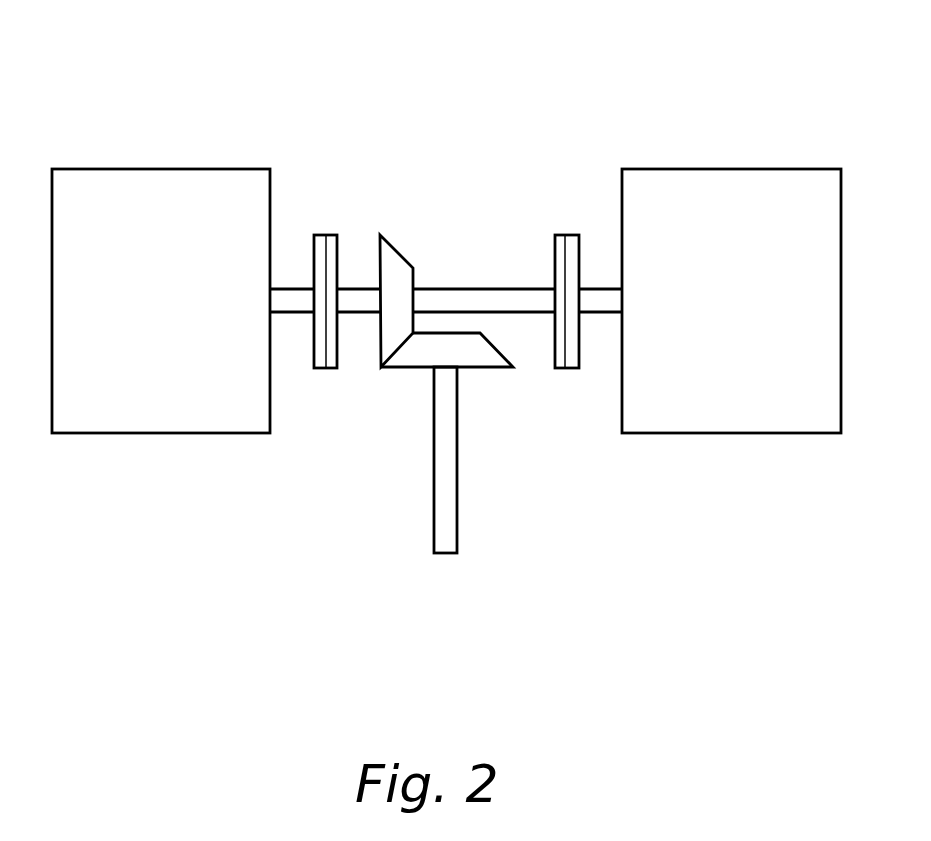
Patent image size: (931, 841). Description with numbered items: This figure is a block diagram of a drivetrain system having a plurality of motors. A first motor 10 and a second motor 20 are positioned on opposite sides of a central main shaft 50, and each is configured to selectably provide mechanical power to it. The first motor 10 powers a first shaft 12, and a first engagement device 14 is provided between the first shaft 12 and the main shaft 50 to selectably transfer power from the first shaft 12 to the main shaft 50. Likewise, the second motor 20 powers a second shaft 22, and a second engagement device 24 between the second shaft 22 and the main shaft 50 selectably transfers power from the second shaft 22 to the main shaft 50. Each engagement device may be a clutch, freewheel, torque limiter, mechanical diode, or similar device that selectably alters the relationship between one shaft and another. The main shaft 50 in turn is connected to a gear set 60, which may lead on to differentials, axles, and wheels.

The first motor 10 is at (728, 169).
The first shaft 12 is at (600, 289).
The first engagement device 14 is at (554, 235).
The second motor 20 is at (160, 169).
The second shaft 22 is at (293, 289).
The second engagement device 24 is at (329, 235).
The main shaft 50 is at (483, 289).
The gear set 60 is at (402, 368).